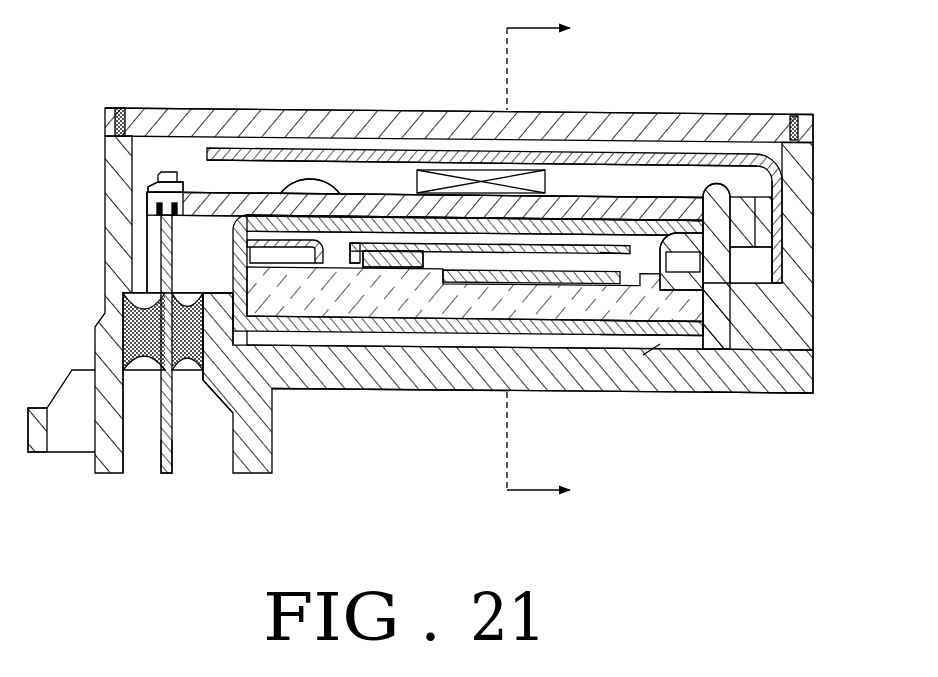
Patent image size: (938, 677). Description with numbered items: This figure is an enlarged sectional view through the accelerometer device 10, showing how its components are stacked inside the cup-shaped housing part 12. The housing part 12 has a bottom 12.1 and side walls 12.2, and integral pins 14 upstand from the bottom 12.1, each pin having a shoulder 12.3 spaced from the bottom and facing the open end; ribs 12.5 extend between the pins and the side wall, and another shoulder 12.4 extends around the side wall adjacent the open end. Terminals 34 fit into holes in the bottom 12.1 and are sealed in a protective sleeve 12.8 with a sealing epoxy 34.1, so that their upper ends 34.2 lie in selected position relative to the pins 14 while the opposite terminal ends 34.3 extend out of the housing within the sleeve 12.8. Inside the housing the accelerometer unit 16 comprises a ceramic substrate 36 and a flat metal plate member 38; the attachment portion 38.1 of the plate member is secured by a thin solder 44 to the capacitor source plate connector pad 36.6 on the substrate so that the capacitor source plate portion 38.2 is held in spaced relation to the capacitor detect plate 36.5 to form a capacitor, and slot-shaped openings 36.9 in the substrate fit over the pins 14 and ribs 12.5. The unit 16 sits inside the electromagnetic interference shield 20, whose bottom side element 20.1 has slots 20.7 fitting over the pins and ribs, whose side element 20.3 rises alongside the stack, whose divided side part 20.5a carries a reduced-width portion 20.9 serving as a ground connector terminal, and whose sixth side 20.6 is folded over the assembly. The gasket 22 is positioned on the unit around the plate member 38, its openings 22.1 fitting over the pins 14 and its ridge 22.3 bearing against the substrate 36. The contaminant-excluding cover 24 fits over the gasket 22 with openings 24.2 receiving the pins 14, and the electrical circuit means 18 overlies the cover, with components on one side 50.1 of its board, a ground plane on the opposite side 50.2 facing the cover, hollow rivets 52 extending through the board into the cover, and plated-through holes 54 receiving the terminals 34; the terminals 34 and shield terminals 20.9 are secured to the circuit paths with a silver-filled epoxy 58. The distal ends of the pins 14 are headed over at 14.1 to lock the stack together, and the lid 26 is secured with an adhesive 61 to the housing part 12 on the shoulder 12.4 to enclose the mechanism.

The accelerometer device 10 is at (467, 432).
The housing part 12 is at (452, 297).
The bottom 12.1 is at (478, 372).
The side walls 12.2 is at (793, 165).
The pin shoulder 12.3 is at (288, 330).
The housing shoulder 12.4 is at (137, 108).
The ribs 12.5 is at (735, 283).
The protective sleeve 12.8 is at (107, 360).
The integral pins 14 is at (508, 123).
The headed-over pin ends 14.1 is at (300, 184).
The accelerometer unit 16 is at (638, 327).
The electrical circuit means 18 is at (651, 192).
The electromagnetic interference shield 20 is at (451, 243).
The bottom side element 20.1 is at (267, 322).
The side element 20.3 is at (777, 185).
The side element part 20.5a is at (158, 247).
The sixth side 20.6 is at (310, 150).
The slots 20.7 is at (780, 392).
The ground connector terminal 20.9 is at (165, 178).
The gasket 22 is at (513, 258).
The gasket openings 22.1 is at (747, 220).
The ridge 22.3 is at (350, 135).
The contaminant-excluding cover 24 is at (233, 217).
The cover openings 24.2 is at (705, 195).
The lid 26 is at (282, 106).
The terminals 34 is at (122, 364).
The sealing epoxy 34.1 is at (132, 313).
The upper terminal ends 34.2 is at (159, 207).
The opposite terminal ends 34.3 is at (167, 448).
The substrate 36 is at (567, 341).
The capacitor detect plate 36.5 is at (553, 284).
The capacitor source plate connector pad 36.6 is at (383, 266).
The substrate openings 36.9 is at (750, 282).
The flat metal plate member 38 is at (490, 168).
The attachment portion 38.1 is at (410, 263).
The capacitor source plate portion 38.2 is at (543, 247).
The thin solder 44 is at (387, 263).
The circuit board side 50.1 is at (622, 197).
The ground plane 50.2 is at (515, 247).
The hollow rivets 52 is at (483, 172).
The plated-through holes 54 is at (148, 189).
The silver-filled epoxy 58 is at (153, 191).
The adhesive 61 is at (116, 108).